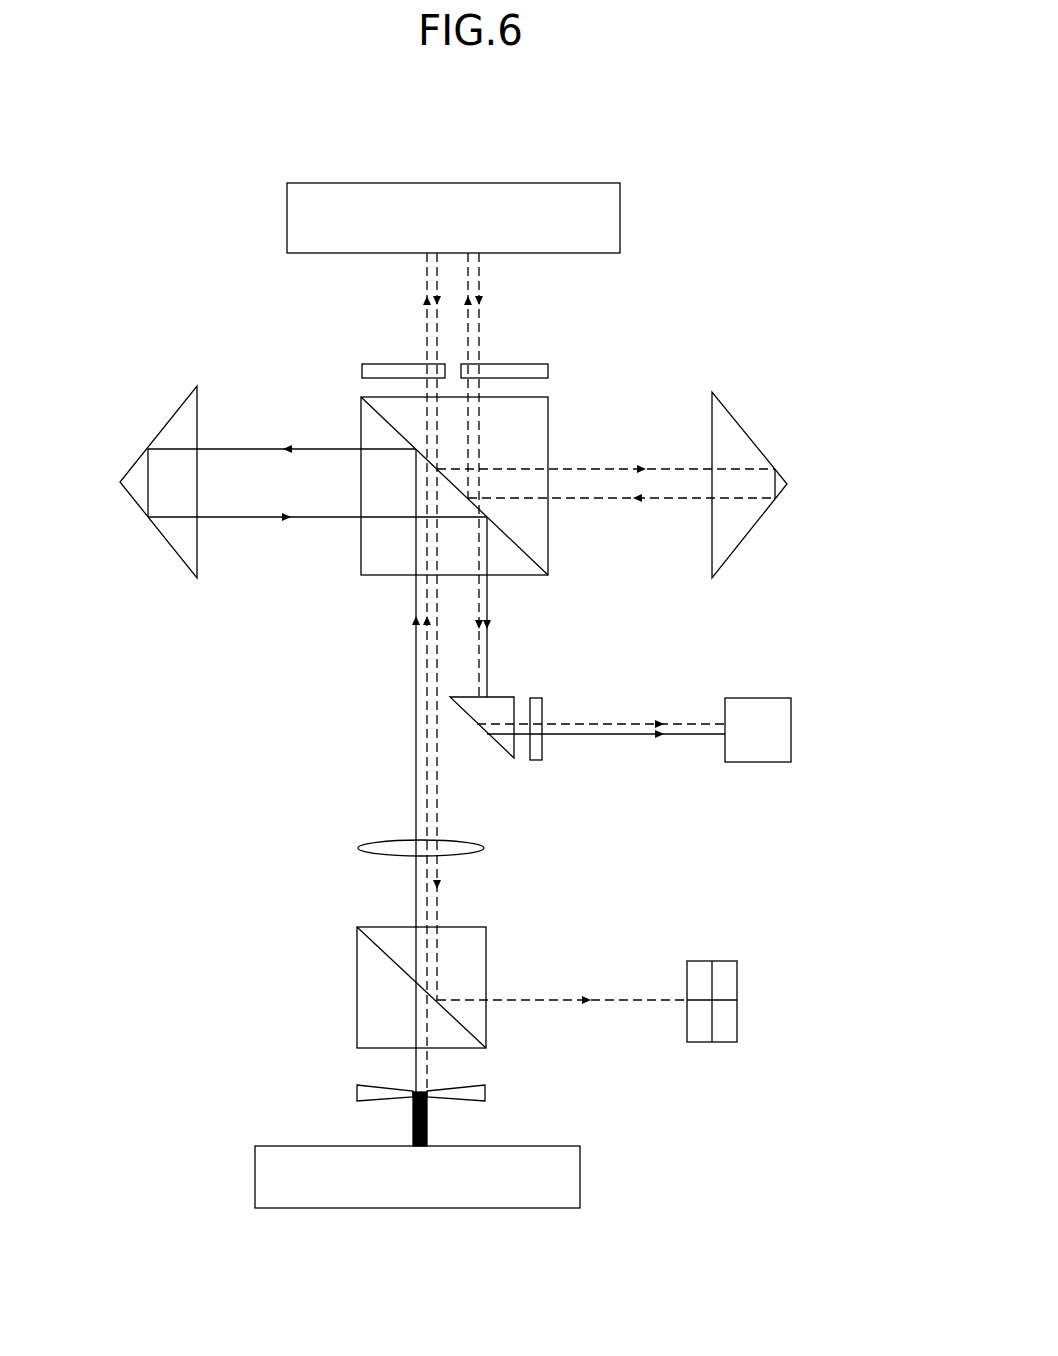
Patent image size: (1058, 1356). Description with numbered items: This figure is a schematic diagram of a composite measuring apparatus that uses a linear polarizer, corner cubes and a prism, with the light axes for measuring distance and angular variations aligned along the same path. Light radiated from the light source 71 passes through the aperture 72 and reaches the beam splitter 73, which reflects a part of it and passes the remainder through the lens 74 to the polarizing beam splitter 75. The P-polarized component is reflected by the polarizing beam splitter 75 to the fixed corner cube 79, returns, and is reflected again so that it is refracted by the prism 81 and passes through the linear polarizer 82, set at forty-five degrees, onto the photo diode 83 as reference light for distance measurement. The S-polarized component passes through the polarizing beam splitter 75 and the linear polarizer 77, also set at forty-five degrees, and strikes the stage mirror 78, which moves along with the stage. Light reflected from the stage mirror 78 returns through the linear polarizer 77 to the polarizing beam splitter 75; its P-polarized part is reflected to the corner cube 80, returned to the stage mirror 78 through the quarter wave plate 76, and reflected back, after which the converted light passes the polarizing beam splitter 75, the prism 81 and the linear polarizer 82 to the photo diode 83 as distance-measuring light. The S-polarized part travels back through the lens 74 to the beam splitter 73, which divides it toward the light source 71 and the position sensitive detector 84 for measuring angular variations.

The light source 71 is at (580, 1177).
The aperture 72 is at (357, 1088).
The beam splitter 73 is at (486, 955).
The lens 74 is at (485, 850).
The polarizing beam splitter 75 is at (361, 430).
The quarter wave plate 76 is at (510, 363).
The linear polarizer 77 is at (400, 363).
The stage mirror 78 is at (458, 183).
The fixed corner cube 79 is at (127, 472).
The corner cube 80 is at (767, 453).
The prism 81 is at (487, 697).
The linear polarizer 82 is at (542, 724).
The photo diode 83 is at (791, 728).
The position sensitive detector 84 is at (737, 1000).